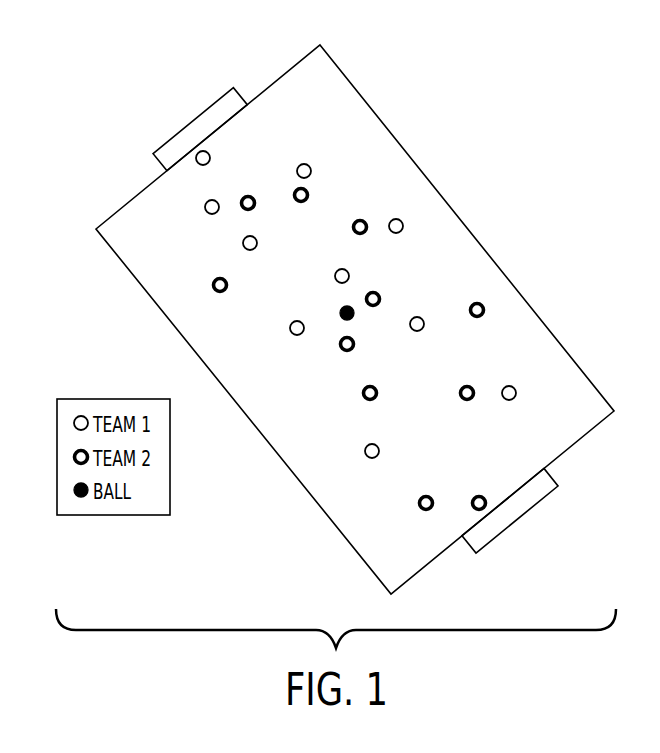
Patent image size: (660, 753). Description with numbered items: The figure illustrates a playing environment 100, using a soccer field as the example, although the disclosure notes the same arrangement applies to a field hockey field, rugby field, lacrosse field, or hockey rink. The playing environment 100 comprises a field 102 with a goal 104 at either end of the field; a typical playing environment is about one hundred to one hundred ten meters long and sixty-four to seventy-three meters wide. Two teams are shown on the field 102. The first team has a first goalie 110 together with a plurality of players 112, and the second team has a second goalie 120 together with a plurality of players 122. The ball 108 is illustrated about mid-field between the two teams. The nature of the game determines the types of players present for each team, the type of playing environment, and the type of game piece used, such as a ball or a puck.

The playing environment 100 is at (505, 150).
The field 102 is at (378, 117).
The goal 104 is at (186, 124).
The ball 108 is at (340, 311).
The first goalie 110 is at (211, 158).
The players 112 is at (206, 214).
The second goalie 120 is at (481, 494).
The players 122 is at (458, 395).